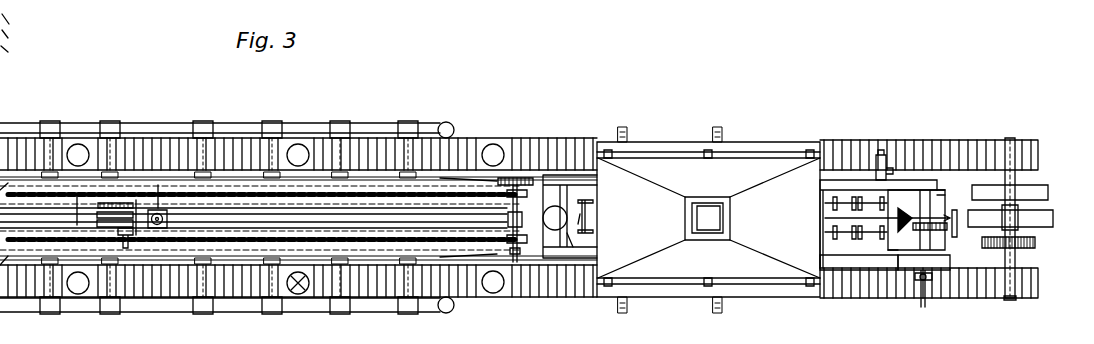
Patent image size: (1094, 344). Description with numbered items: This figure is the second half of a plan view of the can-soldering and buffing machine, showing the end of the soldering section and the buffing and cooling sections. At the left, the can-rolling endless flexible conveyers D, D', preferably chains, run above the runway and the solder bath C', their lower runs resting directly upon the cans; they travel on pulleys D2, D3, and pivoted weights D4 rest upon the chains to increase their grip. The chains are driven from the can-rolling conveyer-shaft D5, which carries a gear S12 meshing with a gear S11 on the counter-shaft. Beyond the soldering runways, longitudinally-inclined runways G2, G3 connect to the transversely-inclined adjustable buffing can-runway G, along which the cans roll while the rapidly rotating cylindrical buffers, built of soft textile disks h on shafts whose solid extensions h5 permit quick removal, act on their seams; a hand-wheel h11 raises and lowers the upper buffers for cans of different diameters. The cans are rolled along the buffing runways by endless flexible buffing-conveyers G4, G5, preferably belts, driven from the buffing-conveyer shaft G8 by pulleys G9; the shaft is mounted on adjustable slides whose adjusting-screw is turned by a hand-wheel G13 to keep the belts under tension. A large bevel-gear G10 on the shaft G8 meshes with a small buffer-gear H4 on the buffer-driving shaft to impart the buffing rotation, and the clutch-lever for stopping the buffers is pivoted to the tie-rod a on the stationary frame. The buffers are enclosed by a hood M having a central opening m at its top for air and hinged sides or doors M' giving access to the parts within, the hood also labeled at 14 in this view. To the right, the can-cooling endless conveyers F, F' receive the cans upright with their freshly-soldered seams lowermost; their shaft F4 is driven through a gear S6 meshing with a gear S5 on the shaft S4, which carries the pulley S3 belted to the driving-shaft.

The can-cooling endless conveyer F' is at (519, 136).
The can-cooling endless conveyer F is at (519, 296).
The cooling-belt shaft F4 is at (1010, 140).
The solder bath C' is at (260, 218).
The can-rolling endless flexible conveyer D' is at (261, 210).
The can-rolling endless flexible conveyer D is at (261, 221).
The pulley D2 is at (540, 247).
The pulley D3 is at (543, 185).
The pivoted weight D4 is at (76, 200).
The can-rolling conveyer-shaft D5 is at (514, 263).
The gear S11 is at (514, 178).
The gear S12 is at (497, 178).
The pulley S3 is at (1048, 192).
The shaft S4 is at (1015, 180).
The gear S5 is at (1022, 248).
The gear S6 is at (1036, 242).
The transversely-inclined adjustable can-runway G is at (932, 206).
The longitudinally-inclined runway G2 is at (531, 259).
The longitudinally-inclined runway G3 is at (540, 176).
The endless flexible buffing-conveyer G4 is at (892, 253).
The endless flexible buffing-conveyer G5 is at (878, 224).
The buffing-conveyer shaft G8 is at (923, 182).
The pulley G9 is at (924, 281).
The large bevel-gear G10 is at (922, 236).
The hand-wheel G13 is at (956, 224).
The small buffer-gear H4 is at (887, 213).
The bar 14 is at (946, 193).
The tie-rod a is at (591, 218).
The soft flexible textile disk h is at (578, 224).
The solid extension h5 is at (597, 233).
The hand-wheel h11 is at (858, 256).
The hood M is at (708, 219).
The hinged side or door M' is at (708, 217).
The central opening m is at (707, 218).